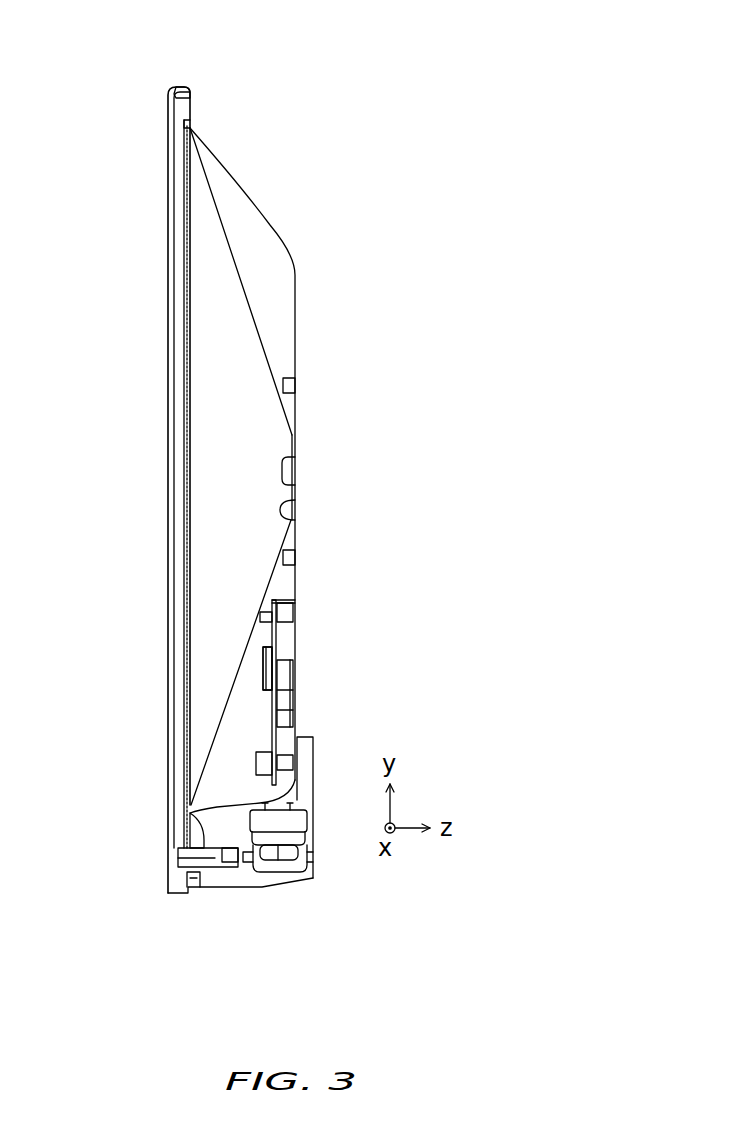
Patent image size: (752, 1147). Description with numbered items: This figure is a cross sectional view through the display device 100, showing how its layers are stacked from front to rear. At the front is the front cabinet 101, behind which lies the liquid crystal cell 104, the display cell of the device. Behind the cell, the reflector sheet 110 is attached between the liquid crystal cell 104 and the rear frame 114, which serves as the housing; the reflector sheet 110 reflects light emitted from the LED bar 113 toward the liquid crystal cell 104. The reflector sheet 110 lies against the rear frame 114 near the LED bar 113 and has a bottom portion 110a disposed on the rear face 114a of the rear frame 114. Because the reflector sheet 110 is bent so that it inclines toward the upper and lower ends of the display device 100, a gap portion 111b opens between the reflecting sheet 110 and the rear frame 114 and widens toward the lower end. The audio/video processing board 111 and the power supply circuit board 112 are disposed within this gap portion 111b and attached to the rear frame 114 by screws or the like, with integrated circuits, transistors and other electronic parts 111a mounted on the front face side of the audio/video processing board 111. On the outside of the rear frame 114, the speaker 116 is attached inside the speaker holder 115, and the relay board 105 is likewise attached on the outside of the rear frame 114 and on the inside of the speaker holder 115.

The display device 100 is at (370, 68).
The front cabinet 101 is at (180, 88).
The liquid crystal cell 104 is at (168, 302).
The relay board 105 is at (215, 858).
The reflector sheet 110 is at (222, 227).
The bottom portion 110a is at (288, 520).
The audio/video processing board 111 is at (276, 633).
The power supply circuit board 112 is at (267, 668).
The electronic parts 111a is at (276, 607).
The gap portion 111b is at (232, 748).
The LED bar 113 is at (288, 472).
The rear frame 114 is at (287, 250).
The rear face 114a is at (297, 602).
The speaker holder 115 is at (313, 745).
The speaker 116 is at (297, 820).